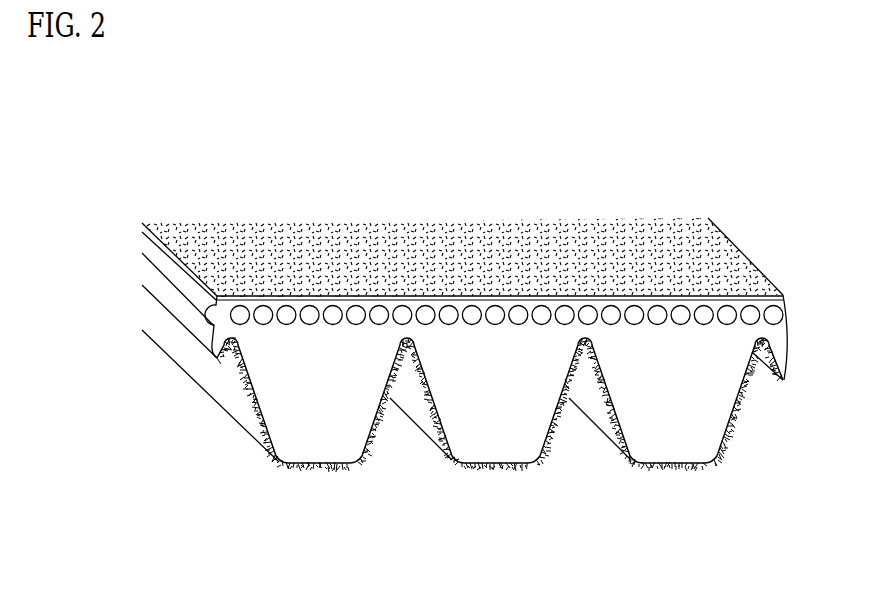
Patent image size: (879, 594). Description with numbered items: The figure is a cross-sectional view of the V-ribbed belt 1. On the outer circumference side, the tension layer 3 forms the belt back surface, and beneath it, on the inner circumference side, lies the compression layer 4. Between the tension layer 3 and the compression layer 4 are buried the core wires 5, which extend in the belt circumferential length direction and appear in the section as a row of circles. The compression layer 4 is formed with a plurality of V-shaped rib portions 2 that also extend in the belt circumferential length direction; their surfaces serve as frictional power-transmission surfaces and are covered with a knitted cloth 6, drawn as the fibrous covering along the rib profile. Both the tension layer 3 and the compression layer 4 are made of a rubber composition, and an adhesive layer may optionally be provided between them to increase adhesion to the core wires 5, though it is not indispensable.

The V-ribbed belt 1 is at (360, 168).
The rib portions 2 is at (300, 447).
The tension layer 3 is at (792, 296).
The compression layer 4 is at (789, 467).
The core wires 5 is at (745, 296).
The knitted cloth 6 is at (250, 407).